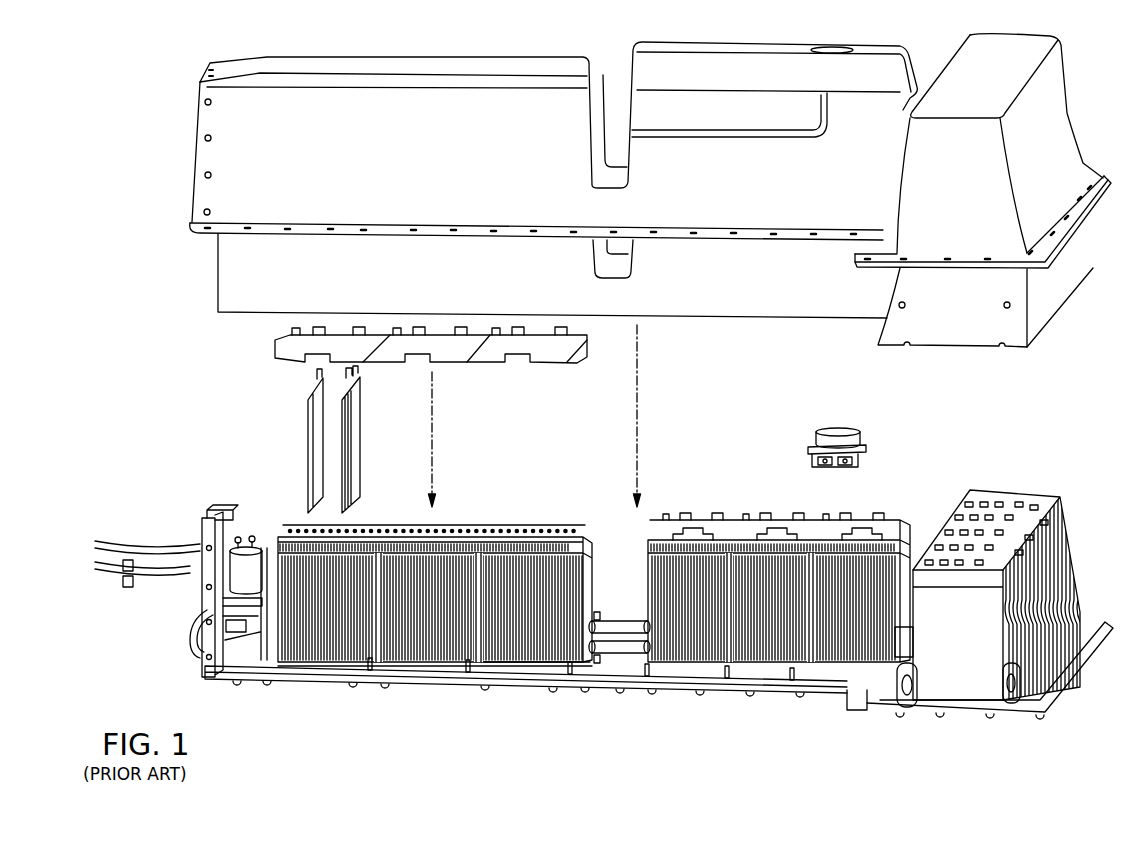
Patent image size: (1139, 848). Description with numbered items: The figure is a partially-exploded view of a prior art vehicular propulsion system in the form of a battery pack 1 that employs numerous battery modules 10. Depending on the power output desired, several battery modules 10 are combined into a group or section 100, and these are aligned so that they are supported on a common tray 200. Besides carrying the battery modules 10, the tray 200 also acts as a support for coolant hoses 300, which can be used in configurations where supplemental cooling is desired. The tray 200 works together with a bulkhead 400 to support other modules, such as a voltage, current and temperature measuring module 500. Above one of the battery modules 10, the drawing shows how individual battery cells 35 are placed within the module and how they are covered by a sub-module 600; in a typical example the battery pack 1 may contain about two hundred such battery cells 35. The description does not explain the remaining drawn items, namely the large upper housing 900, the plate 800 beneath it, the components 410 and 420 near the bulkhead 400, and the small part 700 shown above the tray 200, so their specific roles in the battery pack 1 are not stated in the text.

The battery pack 1 is at (130, 87).
The cover 900 is at (196, 160).
The seal plate 800 is at (220, 278).
The sub-module 600 is at (278, 348).
The battery cell 35 is at (308, 450).
The capacitor 420 is at (250, 533).
The cables 410 is at (190, 628).
The bulkhead 400 is at (203, 665).
The voltage, current and temperature measuring module 500 is at (273, 607).
The group or section 100 is at (607, 730).
The battery module 10 is at (602, 690).
The coolant hose 300 is at (636, 633).
The tray 200 is at (826, 686).
The connector 700 is at (843, 429).